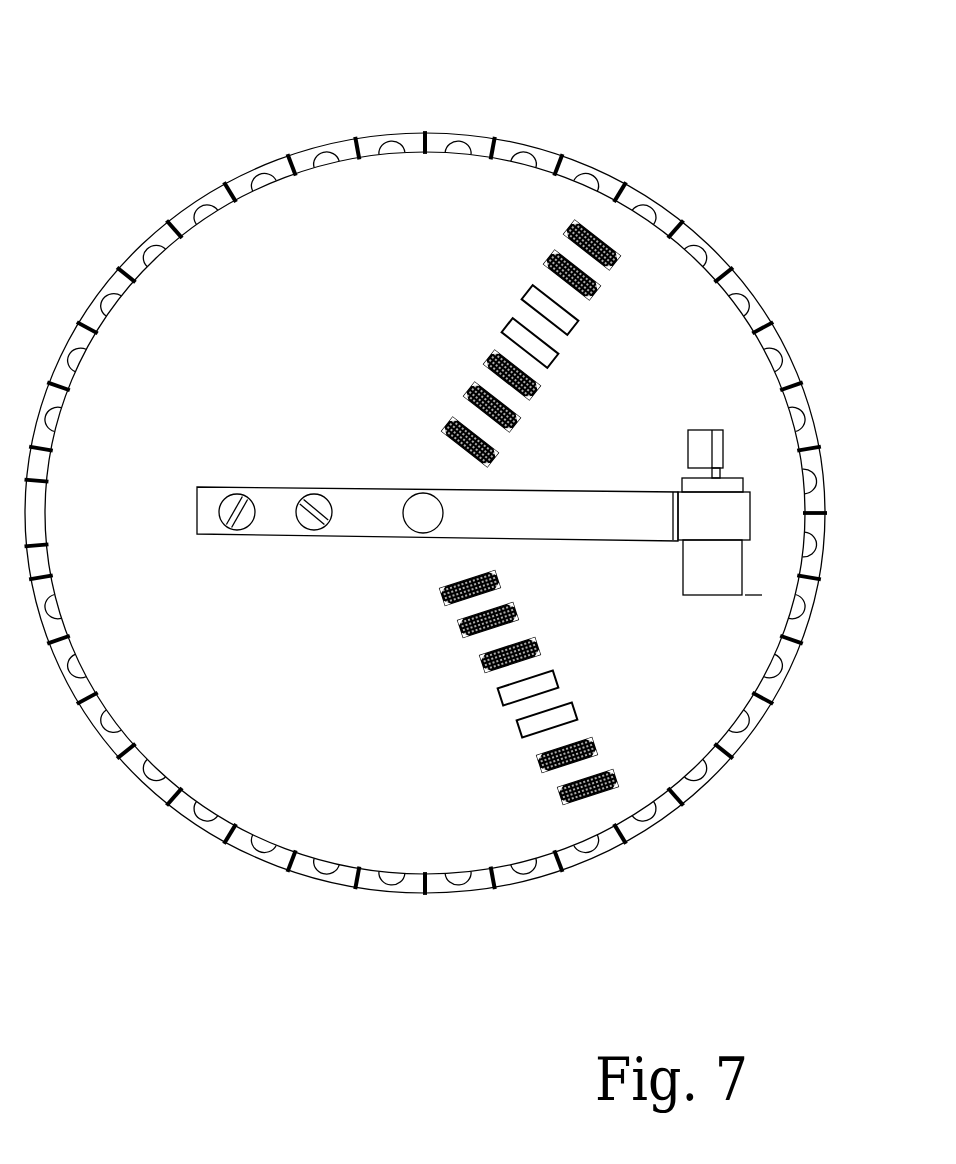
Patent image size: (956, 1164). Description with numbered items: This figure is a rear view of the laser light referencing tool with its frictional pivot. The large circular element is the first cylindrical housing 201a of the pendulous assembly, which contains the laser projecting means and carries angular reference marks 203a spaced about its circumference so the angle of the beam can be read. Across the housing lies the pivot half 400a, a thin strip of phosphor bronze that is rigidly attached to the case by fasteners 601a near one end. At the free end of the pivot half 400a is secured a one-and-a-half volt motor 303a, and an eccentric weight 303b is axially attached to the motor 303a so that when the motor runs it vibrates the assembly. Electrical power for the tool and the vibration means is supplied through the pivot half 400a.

The first cylindrical housing 201a is at (380, 893).
The angular reference marks 203a is at (353, 135).
The motor 303a is at (693, 427).
The eccentric weight 303b is at (737, 477).
The pivot half 400a is at (360, 528).
The fasteners 601a is at (305, 527).